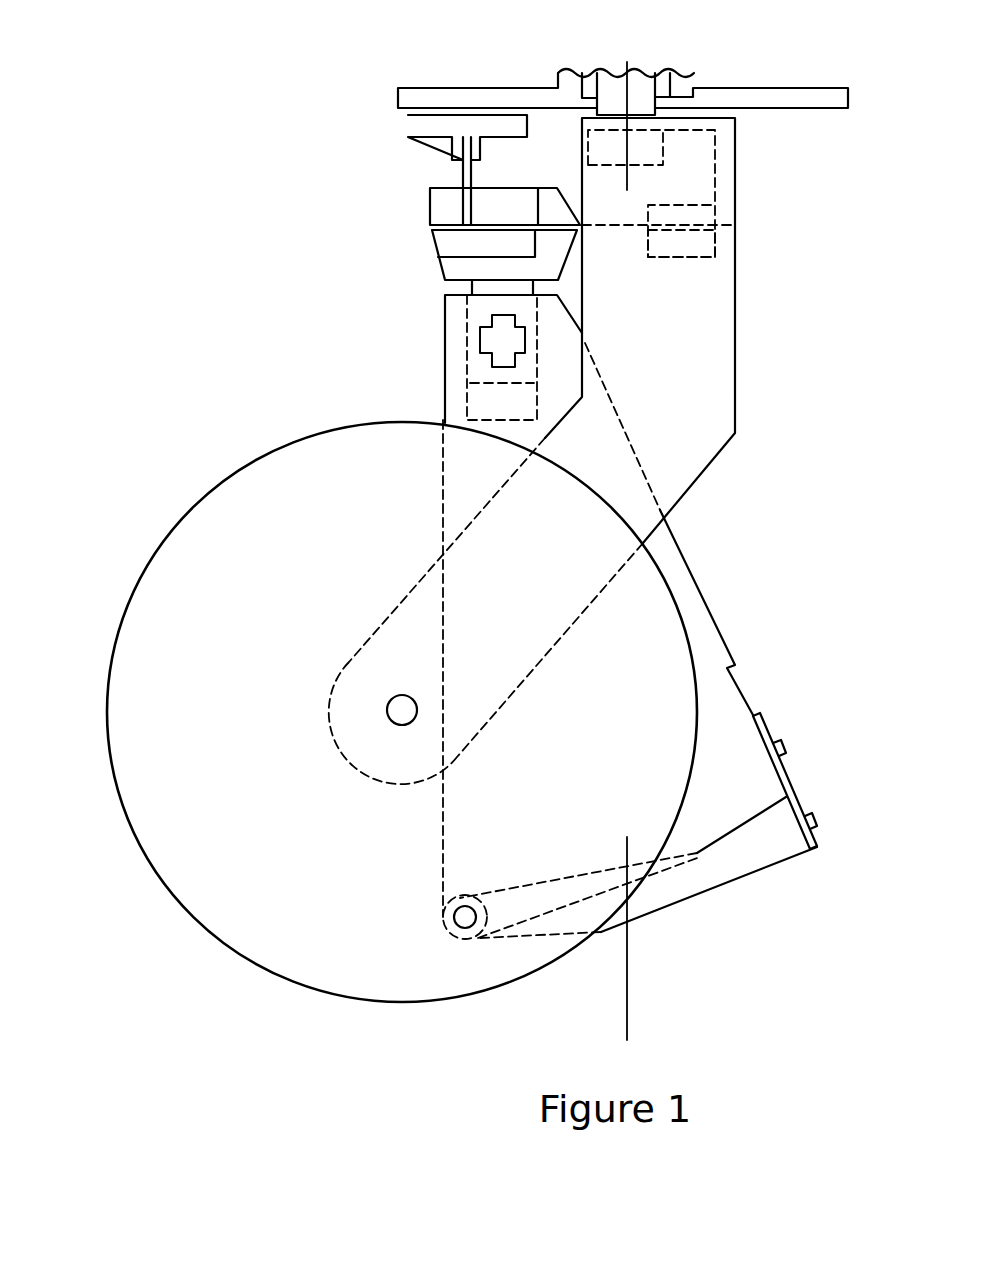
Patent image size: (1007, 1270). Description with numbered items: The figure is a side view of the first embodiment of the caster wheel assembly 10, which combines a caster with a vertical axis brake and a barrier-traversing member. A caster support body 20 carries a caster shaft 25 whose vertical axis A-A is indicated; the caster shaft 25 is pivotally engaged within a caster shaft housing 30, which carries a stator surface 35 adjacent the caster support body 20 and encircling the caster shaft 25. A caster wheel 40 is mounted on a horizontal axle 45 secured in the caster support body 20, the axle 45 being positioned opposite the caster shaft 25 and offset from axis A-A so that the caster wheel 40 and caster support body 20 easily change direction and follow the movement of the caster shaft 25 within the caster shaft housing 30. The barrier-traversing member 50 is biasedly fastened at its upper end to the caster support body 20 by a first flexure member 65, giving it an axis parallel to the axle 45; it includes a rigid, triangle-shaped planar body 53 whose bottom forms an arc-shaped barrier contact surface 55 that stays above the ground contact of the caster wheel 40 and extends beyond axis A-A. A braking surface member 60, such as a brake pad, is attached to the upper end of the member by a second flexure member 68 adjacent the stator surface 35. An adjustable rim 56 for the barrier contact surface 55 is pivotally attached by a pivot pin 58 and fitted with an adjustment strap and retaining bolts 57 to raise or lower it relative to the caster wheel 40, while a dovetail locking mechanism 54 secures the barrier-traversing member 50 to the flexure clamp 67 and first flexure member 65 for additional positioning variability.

The caster wheel assembly 10 is at (206, 346).
The caster support body 20 is at (725, 173).
The caster shaft 25 is at (598, 110).
The caster shaft housing 30 is at (590, 84).
The stator surface 35 is at (398, 108).
The caster wheel 40 is at (258, 878).
The axle 45 is at (395, 702).
The barrier-traversing member 50 is at (788, 606).
The planar body 53 is at (693, 618).
The dovetail locking mechanism 54 is at (487, 343).
The barrier contact surface 55 is at (662, 917).
The adjustable rim 56 is at (715, 877).
The retaining bolts 57 is at (818, 823).
The pivot pin 58 is at (465, 920).
The braking surface member 60 is at (407, 127).
The first flexure member 65 is at (715, 227).
The flexure clamp 67 is at (483, 202).
The second flexure member 68 is at (462, 178).